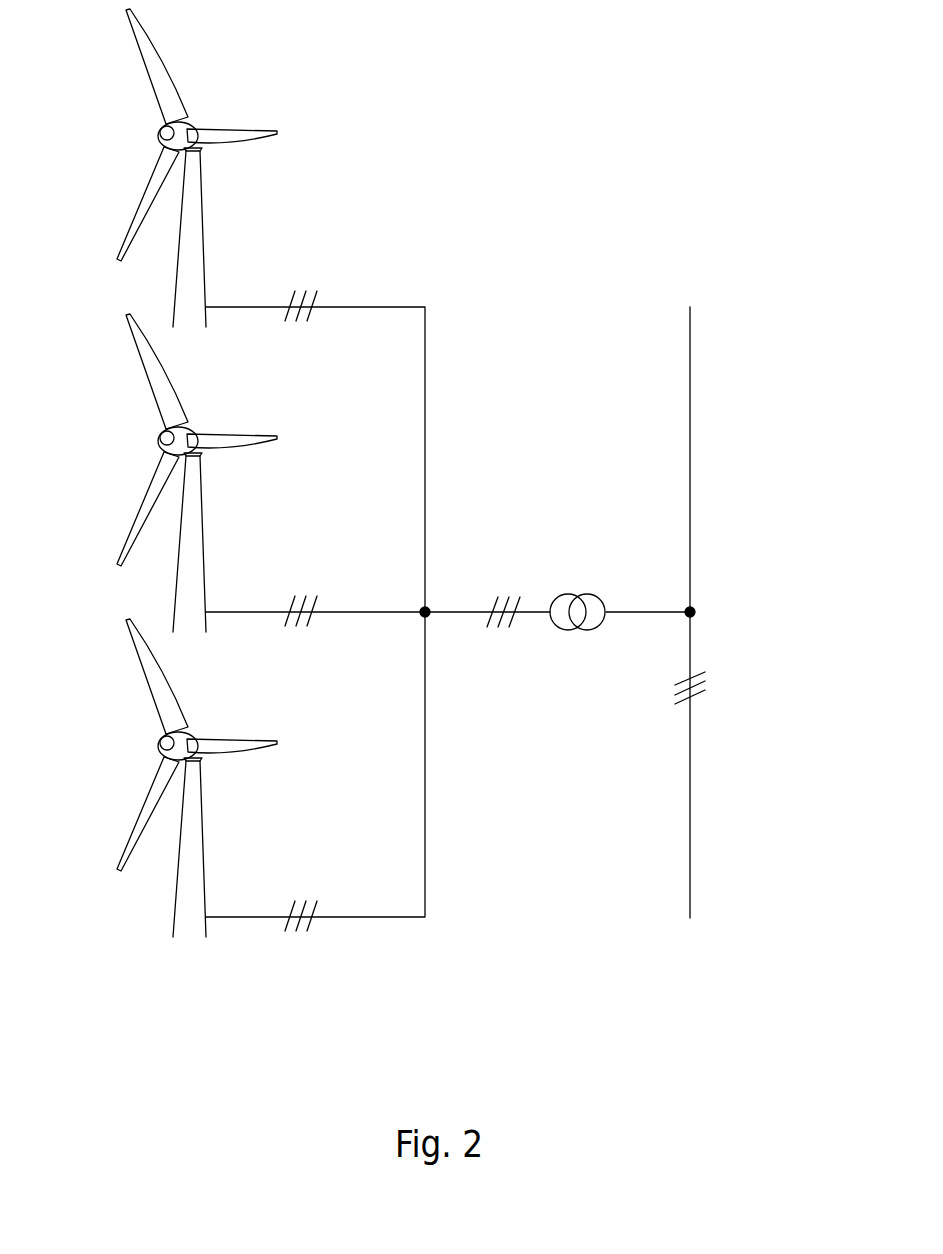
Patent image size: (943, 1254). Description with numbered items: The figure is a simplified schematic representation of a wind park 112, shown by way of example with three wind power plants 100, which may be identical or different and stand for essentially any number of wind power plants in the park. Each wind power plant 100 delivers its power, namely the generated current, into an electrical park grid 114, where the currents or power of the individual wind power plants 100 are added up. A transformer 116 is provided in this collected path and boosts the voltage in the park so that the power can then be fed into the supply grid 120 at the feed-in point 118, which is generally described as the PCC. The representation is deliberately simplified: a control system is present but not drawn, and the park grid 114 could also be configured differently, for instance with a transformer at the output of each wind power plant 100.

The wind power plant 100 is at (194, 222).
The wind park 112 is at (500, 134).
The electrical park grid 114 is at (447, 608).
The transformer 116 is at (584, 579).
The feed-in point 118 is at (706, 588).
The supply grid 120 is at (692, 340).